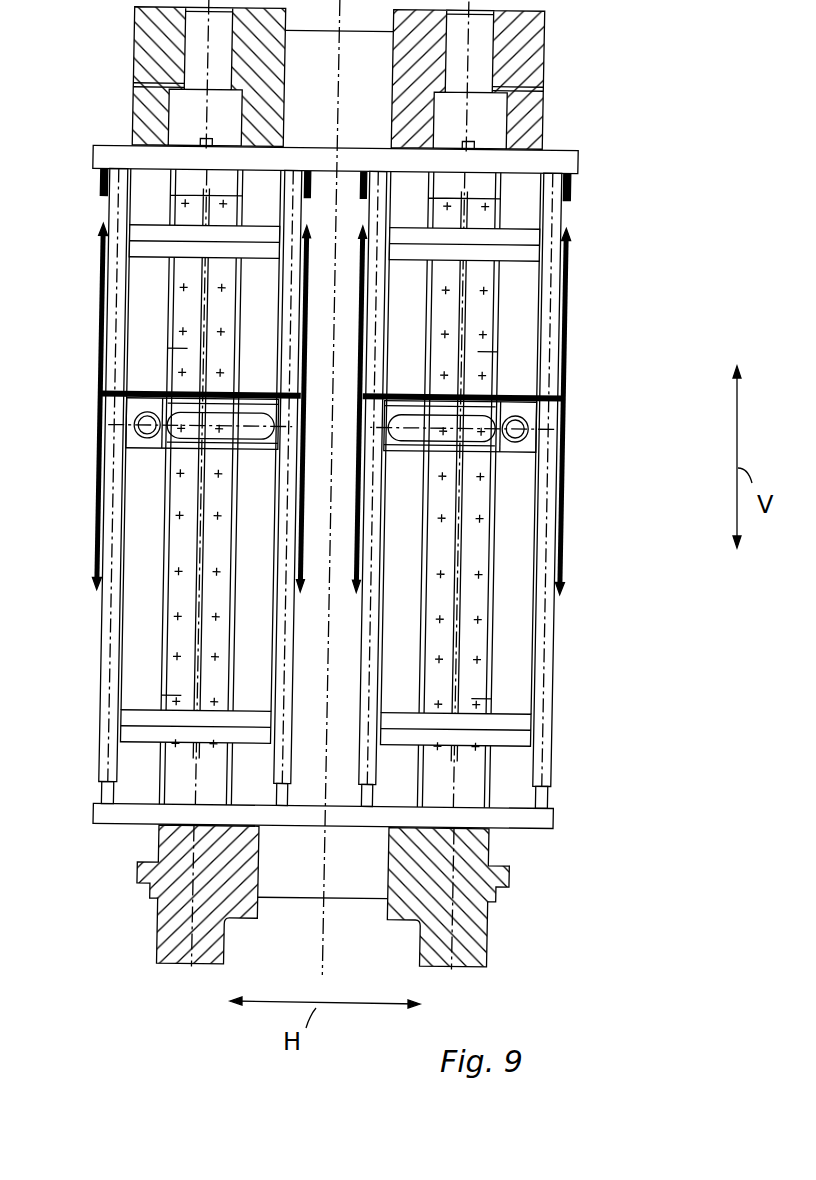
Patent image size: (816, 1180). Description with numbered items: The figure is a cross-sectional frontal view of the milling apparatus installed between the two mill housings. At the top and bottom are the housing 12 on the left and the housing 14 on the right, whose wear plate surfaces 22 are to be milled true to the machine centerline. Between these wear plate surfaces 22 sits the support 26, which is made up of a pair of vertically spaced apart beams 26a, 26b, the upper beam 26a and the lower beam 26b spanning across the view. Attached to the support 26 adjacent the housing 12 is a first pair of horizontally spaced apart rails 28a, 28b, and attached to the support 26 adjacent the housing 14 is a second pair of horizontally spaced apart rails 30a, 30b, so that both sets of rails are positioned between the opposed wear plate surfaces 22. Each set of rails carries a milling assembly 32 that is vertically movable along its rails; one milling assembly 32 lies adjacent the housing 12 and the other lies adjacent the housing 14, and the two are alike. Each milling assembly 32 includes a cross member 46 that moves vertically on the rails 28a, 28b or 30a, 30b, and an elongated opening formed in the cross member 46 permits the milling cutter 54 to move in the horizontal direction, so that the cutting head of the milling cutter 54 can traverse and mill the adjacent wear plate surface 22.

The housing 12 is at (135, 19).
The housing 14 is at (543, 37).
The wear plate surface 22 is at (226, 273).
The support 26 is at (371, 446).
The beam 26a is at (580, 158).
The beam 26b is at (553, 818).
The rail 28a is at (103, 712).
The rail 28b is at (293, 690).
The rail 30a is at (362, 628).
The rail 30b is at (557, 657).
The milling assembly 32 is at (148, 388).
The cross member 46 is at (256, 453).
The milling cutter 54 is at (151, 442).